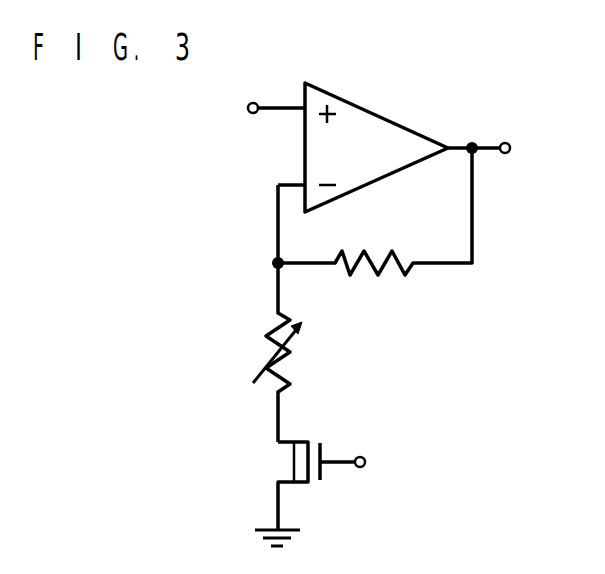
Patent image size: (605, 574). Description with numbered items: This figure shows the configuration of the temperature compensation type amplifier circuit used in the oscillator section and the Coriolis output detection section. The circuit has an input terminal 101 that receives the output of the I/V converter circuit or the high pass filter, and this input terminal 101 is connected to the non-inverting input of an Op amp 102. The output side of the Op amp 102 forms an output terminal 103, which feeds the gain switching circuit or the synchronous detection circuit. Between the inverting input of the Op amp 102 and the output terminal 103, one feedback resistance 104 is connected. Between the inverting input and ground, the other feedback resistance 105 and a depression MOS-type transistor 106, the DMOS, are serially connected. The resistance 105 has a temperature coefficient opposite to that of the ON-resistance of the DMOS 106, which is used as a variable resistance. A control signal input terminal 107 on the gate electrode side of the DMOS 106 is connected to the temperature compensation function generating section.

The input terminal 101 is at (250, 113).
The Op amp 102 is at (398, 125).
The output terminal 103 is at (507, 154).
The feedback resistance 104 is at (383, 276).
The feedback resistance 105 is at (267, 362).
The depression MOS-type transistor 106 is at (322, 448).
The control signal input terminal 107 is at (365, 468).